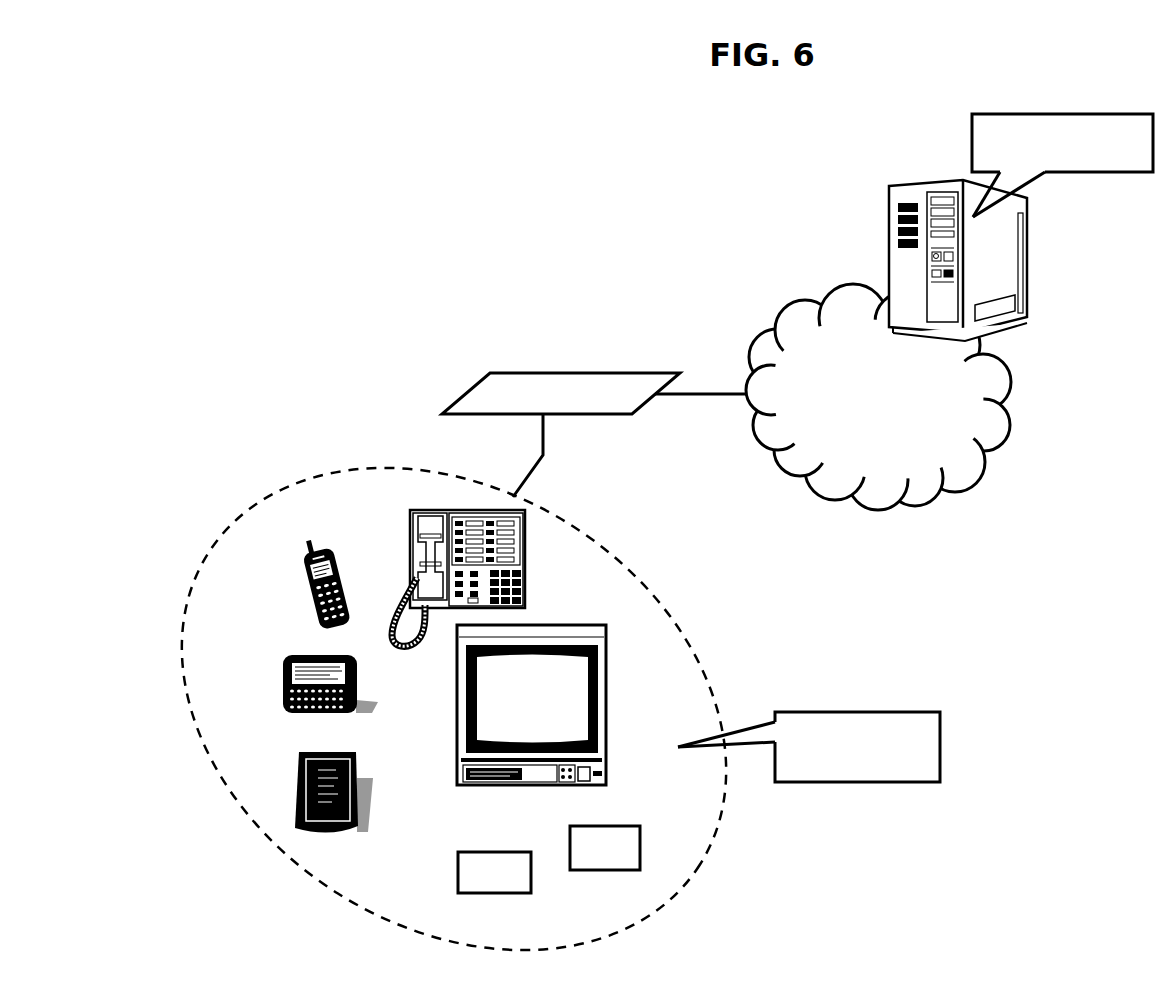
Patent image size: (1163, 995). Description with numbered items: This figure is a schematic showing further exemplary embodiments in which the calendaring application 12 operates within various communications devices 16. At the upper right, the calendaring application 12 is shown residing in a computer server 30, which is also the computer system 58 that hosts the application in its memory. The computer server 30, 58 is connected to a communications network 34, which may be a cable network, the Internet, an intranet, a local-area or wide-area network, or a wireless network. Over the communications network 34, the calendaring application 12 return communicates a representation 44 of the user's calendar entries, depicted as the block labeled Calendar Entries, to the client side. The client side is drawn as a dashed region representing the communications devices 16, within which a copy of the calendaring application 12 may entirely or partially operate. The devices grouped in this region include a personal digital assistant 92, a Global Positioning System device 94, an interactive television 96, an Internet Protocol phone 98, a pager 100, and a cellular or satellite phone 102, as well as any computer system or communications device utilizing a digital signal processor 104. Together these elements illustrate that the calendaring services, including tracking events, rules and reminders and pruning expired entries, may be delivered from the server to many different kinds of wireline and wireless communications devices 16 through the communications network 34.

The calendaring application 12 is at (1136, 175).
The communications device 16 is at (896, 230).
The computer server 30 is at (610, 587).
The computer system 58 is at (610, 587).
The communications network 34 is at (777, 321).
The representation of calendar entries 44 is at (560, 372).
The personal digital assistant 92 is at (302, 773).
The Global Positioning System device 94 is at (457, 864).
The interactive television 96 is at (508, 787).
The Internet Protocol phone 98 is at (408, 521).
The pager 100 is at (288, 675).
The cellular/satellite phone 102 is at (307, 582).
The digital signal processor 104 is at (642, 846).